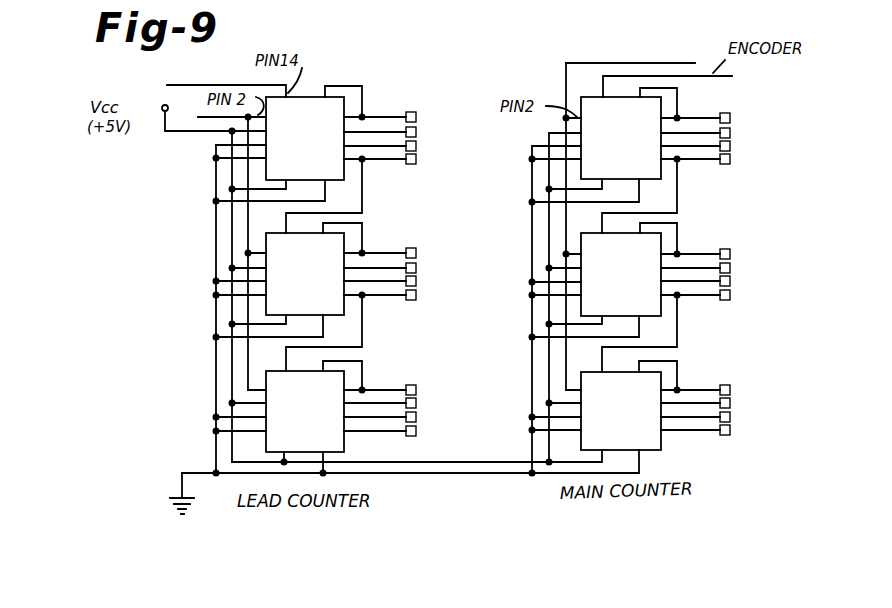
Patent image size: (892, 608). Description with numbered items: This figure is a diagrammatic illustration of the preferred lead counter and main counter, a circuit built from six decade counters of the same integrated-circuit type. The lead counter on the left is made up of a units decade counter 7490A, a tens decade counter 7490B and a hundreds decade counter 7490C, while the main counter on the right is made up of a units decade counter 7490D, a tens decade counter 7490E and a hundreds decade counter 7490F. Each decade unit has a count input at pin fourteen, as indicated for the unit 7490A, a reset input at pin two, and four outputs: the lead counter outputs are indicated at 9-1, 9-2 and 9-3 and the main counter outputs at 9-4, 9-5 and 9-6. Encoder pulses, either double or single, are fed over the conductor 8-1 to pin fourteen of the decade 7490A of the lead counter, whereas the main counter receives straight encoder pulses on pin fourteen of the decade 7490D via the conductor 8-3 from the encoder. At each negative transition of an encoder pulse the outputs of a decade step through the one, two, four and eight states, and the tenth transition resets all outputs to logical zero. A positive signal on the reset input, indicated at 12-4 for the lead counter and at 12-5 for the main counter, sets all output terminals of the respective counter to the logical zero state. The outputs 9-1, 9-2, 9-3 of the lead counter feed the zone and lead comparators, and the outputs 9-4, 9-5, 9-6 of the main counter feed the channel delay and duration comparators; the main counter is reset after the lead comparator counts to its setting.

The encoder pulse input conductor 8-1 is at (184, 68).
The lead counter reset input 12-4 is at (198, 117).
The main counter reset input 12-5 is at (645, 62).
The encoder conductor 8-3 is at (697, 76).
The units decade outputs of lead counter 9-1 is at (410, 166).
The tens decade outputs of lead counter 9-2 is at (407, 302).
The hundreds decade outputs of lead counter 9-3 is at (408, 436).
The units decade outputs of main counter 9-4 is at (724, 168).
The tens decade outputs of main counter 9-5 is at (727, 308).
The hundreds decade outputs of main counter 9-6 is at (725, 443).
The units decade counter of lead counter 7490A is at (307, 97).
The tens decade counter of lead counter 7490B is at (344, 243).
The hundreds decade counter of lead counter 7490C is at (337, 377).
The units decade counter of main counter 7490D is at (592, 97).
The tens decade counter of main counter 7490E is at (588, 242).
The hundreds decade counter of main counter 7490F is at (590, 375).